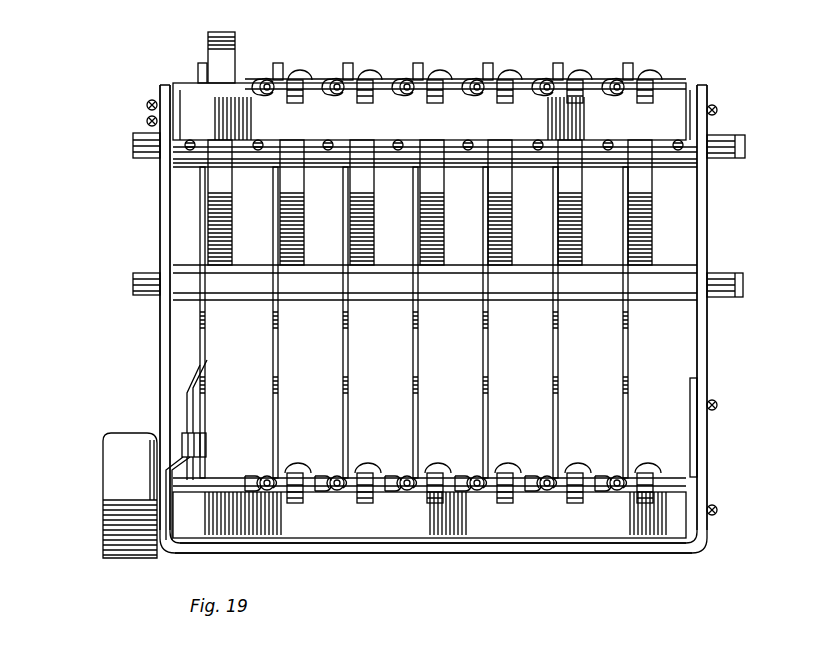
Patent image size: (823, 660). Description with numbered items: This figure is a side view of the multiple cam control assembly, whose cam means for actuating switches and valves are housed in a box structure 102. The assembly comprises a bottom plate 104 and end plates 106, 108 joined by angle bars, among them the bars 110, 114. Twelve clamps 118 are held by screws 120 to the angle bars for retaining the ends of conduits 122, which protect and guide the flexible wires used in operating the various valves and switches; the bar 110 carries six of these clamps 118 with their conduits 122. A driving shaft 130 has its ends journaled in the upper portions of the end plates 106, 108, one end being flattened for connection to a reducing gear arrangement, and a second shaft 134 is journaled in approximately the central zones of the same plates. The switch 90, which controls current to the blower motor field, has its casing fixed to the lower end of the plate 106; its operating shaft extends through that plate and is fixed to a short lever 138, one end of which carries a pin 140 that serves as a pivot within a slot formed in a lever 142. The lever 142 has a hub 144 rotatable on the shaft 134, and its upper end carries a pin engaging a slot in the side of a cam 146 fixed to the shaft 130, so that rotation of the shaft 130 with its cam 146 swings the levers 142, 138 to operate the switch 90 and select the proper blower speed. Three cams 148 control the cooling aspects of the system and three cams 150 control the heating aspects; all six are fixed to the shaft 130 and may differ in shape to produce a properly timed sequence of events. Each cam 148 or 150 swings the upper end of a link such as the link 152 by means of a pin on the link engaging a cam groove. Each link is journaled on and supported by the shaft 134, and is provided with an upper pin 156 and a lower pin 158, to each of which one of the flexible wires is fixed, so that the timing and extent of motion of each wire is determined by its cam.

The switch 90 is at (120, 440).
The box structure 102 is at (160, 240).
The bottom plate 104 is at (520, 548).
The end plate 106 is at (160, 205).
The end plate 108 is at (702, 253).
The angle bar 110 is at (192, 100).
The angle bar 114 is at (395, 528).
The clamp 118 is at (330, 80).
The screw 120 is at (372, 78).
The conduit 122 is at (337, 94).
The driving shaft 130 is at (715, 137).
The second shaft 134 is at (145, 280).
The short lever 138 is at (180, 452).
The pin 140 is at (197, 437).
The lever 142 is at (205, 373).
The hub 144 is at (197, 312).
The cam 146 is at (228, 60).
The cam 148 is at (365, 183).
The cam 150 is at (293, 183).
The link 152 is at (278, 378).
The pin 156 is at (258, 80).
The pin 158 is at (243, 485).